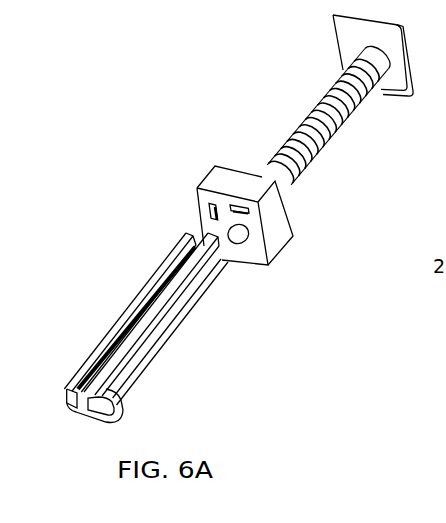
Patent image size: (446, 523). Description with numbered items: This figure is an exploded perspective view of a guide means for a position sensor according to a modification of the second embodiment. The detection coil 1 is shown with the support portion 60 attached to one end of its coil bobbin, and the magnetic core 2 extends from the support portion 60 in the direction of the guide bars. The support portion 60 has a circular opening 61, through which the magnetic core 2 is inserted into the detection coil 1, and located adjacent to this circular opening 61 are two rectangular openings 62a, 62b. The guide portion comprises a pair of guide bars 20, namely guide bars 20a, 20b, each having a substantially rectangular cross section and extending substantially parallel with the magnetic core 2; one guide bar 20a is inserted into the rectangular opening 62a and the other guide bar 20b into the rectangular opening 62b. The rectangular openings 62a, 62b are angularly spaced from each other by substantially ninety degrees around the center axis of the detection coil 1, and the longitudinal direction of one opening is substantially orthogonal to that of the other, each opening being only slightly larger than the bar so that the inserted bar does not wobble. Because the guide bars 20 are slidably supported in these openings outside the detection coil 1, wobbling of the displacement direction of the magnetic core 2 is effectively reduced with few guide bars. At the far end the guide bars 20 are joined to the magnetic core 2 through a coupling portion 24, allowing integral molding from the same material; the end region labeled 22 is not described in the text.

The detection coil 1 is at (317, 106).
The magnetic core 2 is at (180, 317).
The guide bar 20 is at (135, 306).
The guide bar 20a is at (172, 290).
The guide bar 20b is at (137, 305).
The side wall 22 is at (83, 401).
The coupling portion 24 is at (120, 403).
The support portion 60 is at (230, 219).
The circular opening 61 is at (238, 242).
The rectangular opening 62a is at (244, 214).
The rectangular opening 62b is at (210, 212).